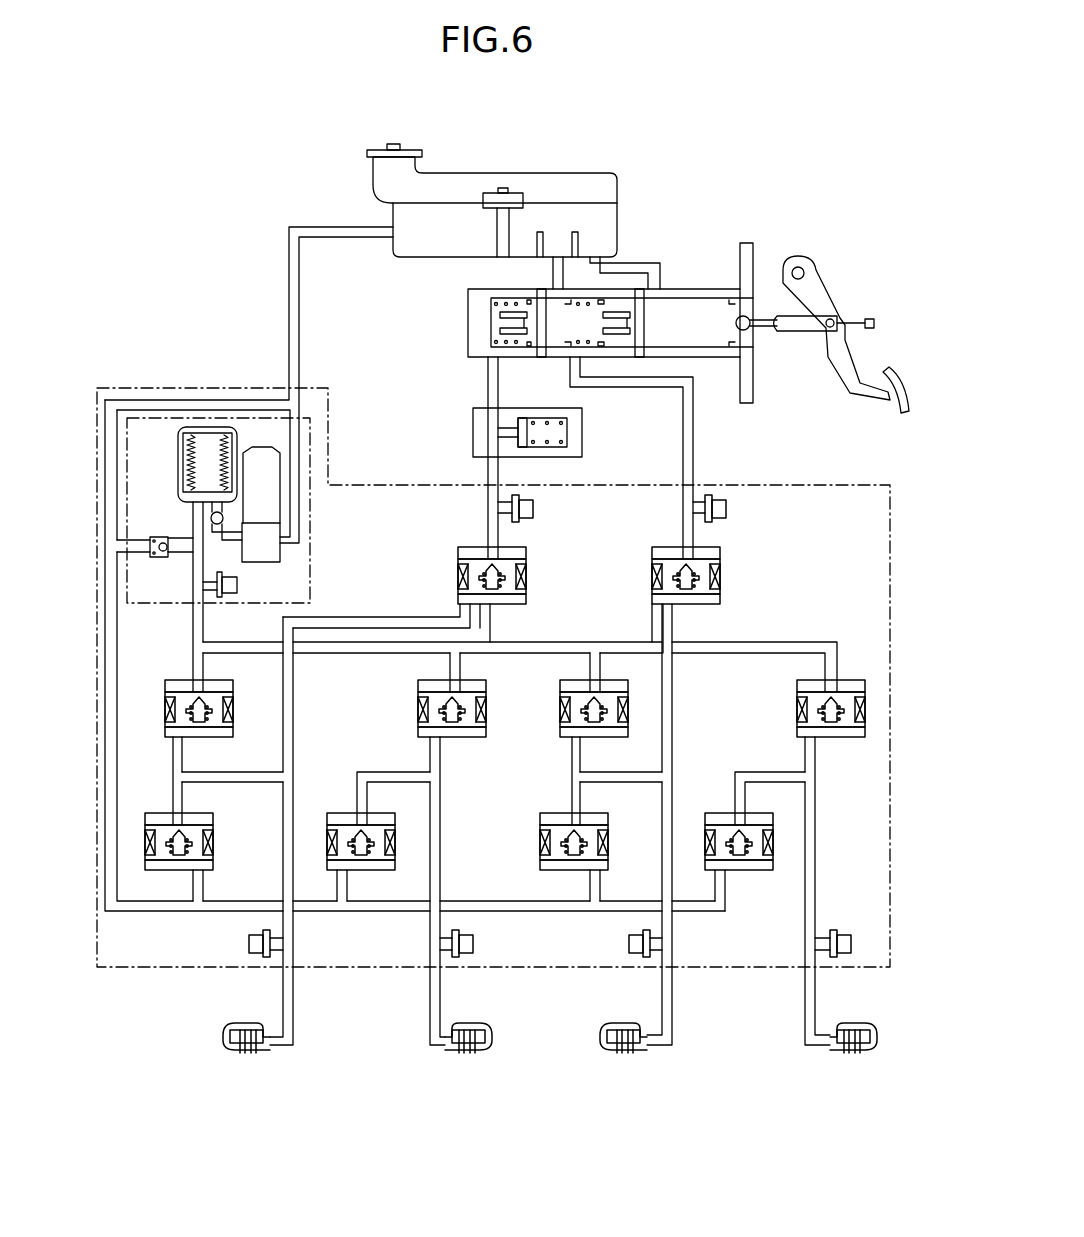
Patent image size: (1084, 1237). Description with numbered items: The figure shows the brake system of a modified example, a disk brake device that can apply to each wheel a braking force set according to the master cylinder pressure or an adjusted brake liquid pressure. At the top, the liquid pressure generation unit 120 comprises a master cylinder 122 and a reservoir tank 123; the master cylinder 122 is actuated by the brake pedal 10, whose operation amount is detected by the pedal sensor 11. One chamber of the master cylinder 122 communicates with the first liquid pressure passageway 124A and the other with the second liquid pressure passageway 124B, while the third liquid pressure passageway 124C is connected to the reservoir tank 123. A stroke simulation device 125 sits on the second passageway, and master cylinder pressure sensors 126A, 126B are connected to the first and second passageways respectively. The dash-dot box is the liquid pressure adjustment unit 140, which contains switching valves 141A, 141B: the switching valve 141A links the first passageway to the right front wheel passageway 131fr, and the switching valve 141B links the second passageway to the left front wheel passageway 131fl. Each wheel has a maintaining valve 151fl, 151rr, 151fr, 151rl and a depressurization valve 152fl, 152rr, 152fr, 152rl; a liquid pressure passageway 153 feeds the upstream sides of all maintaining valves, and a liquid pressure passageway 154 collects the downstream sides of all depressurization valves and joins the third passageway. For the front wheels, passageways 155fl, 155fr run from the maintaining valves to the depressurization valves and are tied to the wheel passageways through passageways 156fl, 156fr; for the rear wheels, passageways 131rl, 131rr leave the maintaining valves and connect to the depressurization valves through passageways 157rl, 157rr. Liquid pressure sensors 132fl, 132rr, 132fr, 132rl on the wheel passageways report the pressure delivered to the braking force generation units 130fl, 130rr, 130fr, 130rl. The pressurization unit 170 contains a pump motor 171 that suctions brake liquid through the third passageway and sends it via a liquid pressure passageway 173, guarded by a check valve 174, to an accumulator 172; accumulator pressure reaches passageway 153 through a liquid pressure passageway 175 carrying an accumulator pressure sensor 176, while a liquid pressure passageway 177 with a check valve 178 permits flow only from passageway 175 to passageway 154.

The liquid pressure generation unit 120 is at (342, 150).
The reservoir tank 123 is at (532, 174).
The master cylinder 122 is at (700, 288).
The brake pedal 10 is at (808, 262).
The pedal sensor 11 is at (868, 318).
The first liquid pressure passageway 124A is at (693, 432).
The second liquid pressure passageway 124B is at (488, 384).
The third liquid pressure passageway 124C is at (289, 250).
The stroke simulation device 125 is at (583, 431).
The liquid pressure adjustment unit 140 is at (800, 484).
The master cylinder pressure sensor 126A is at (725, 509).
The master cylinder pressure sensor 126B is at (533, 509).
The switching valve 141A is at (721, 569).
The switching valve 141B is at (528, 569).
The pressurization unit 170 is at (312, 516).
The pump motor 171 is at (281, 548).
The accumulator 172 is at (178, 470).
The liquid pressure passageway 173 is at (222, 546).
The check valve 174 is at (211, 518).
The liquid pressure passageway 175 is at (193, 628).
The accumulator pressure sensor 176 is at (237, 590).
The liquid pressure passageway 177 is at (180, 556).
The check valve 178 is at (156, 560).
The liquid pressure passageway 153 is at (563, 641).
The liquid pressure passageway 154 is at (476, 900).
The maintaining valve 151fl is at (220, 681).
The maintaining valve 151rr is at (432, 681).
The maintaining valve 151fr is at (574, 681).
The maintaining valve 151rl is at (810, 681).
The depressurization valve 152fl is at (180, 871).
The depressurization valve 152rr is at (362, 871).
The depressurization valve 152fr is at (575, 871).
The depressurization valve 152rl is at (739, 871).
The liquid pressure passageway 155fl is at (172, 793).
The liquid pressure passageway 156fl is at (270, 776).
The liquid pressure passageway 157rr is at (357, 793).
The liquid pressure passageway 155fr is at (572, 793).
The liquid pressure passageway 156fr is at (636, 783).
The liquid pressure passageway 157rl is at (735, 793).
The liquid pressure sensor 132fl is at (250, 944).
The liquid pressure sensor 132rr is at (474, 945).
The liquid pressure sensor 132fr is at (628, 944).
The liquid pressure sensor 132rl is at (843, 930).
The liquid pressure passageway 131fl is at (294, 1021).
The liquid pressure passageway 131rr is at (429, 1021).
The liquid pressure passageway 131fr is at (673, 1021).
The liquid pressure passageway 131rl is at (805, 1021).
The braking force generation unit 130fl is at (258, 1054).
The braking force generation unit 130rr is at (460, 1054).
The braking force generation unit 130fr is at (635, 1054).
The braking force generation unit 130rl is at (840, 1054).